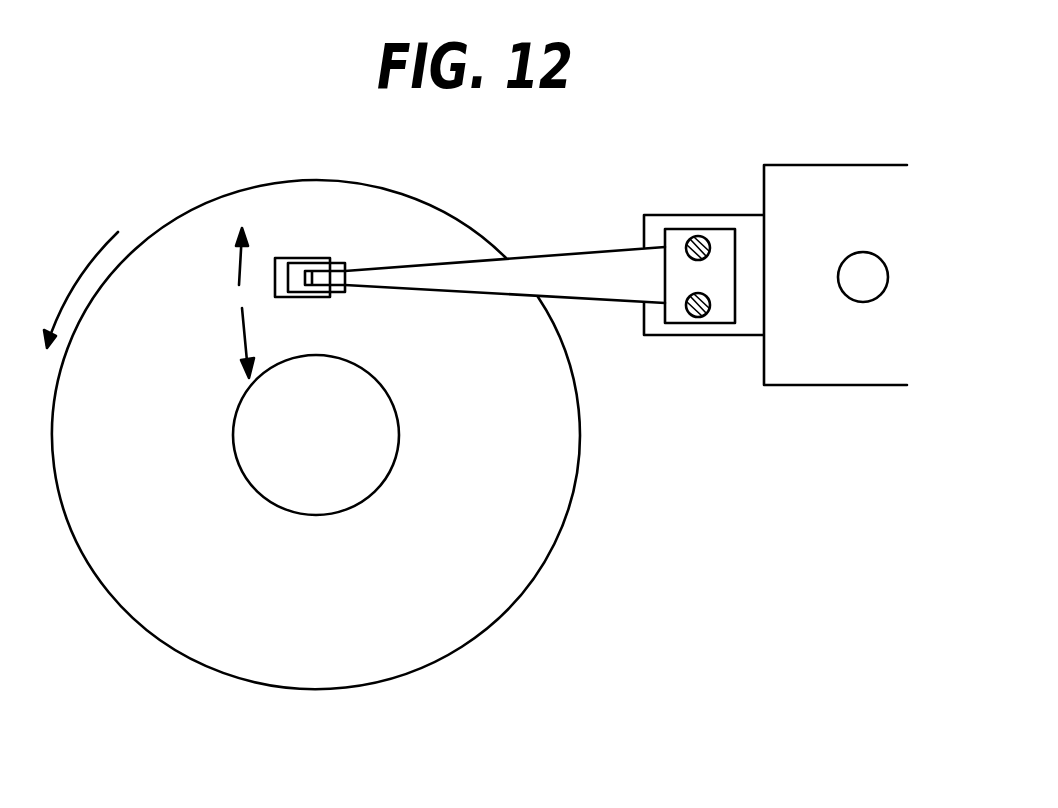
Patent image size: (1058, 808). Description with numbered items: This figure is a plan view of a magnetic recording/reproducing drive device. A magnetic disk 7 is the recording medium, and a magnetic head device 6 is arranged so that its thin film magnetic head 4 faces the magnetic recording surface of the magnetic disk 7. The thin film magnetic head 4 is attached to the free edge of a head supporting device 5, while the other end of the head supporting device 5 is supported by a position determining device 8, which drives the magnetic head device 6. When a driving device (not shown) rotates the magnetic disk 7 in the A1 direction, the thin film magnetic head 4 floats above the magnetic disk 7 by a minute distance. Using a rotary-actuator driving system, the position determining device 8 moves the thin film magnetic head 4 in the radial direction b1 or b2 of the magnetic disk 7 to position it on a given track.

The thin film magnetic head 4 is at (314, 258).
The head supporting device 5 is at (537, 270).
The magnetic head device 6 is at (603, 323).
The magnetic disk 7 is at (512, 573).
The position determining device 8 is at (862, 360).
The rotation direction A1 is at (92, 260).
The radial direction b1 is at (243, 340).
The radial direction b2 is at (238, 258).